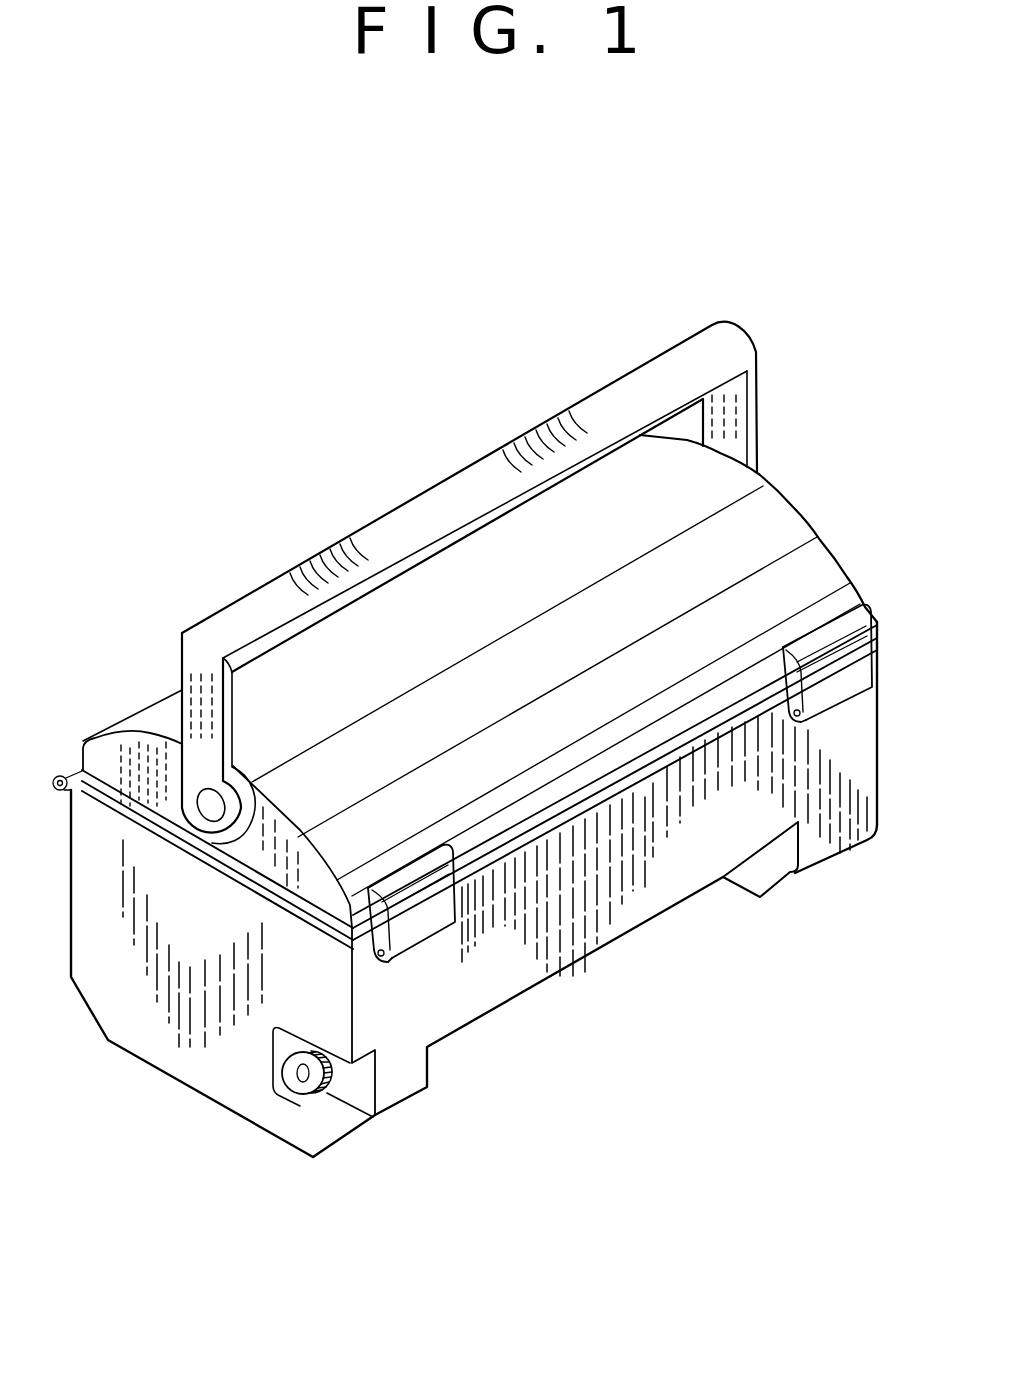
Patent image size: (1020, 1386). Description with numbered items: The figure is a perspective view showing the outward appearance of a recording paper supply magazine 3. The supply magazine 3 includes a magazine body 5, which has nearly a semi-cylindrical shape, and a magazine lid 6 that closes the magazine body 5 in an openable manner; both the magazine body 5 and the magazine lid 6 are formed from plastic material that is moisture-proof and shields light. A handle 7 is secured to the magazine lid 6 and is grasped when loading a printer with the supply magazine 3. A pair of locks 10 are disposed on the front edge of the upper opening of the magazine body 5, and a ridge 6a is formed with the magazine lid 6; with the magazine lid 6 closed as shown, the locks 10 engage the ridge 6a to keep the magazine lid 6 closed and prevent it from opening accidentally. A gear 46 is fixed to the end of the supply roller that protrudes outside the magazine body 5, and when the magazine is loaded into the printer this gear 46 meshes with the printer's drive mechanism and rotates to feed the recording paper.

The supply magazine 3 is at (430, 355).
The magazine body 5 is at (188, 1028).
The magazine lid 6 is at (782, 523).
The ridge 6a is at (570, 817).
The handle 7 is at (395, 523).
The locks 10 is at (838, 680).
The gear 46 is at (303, 1092).